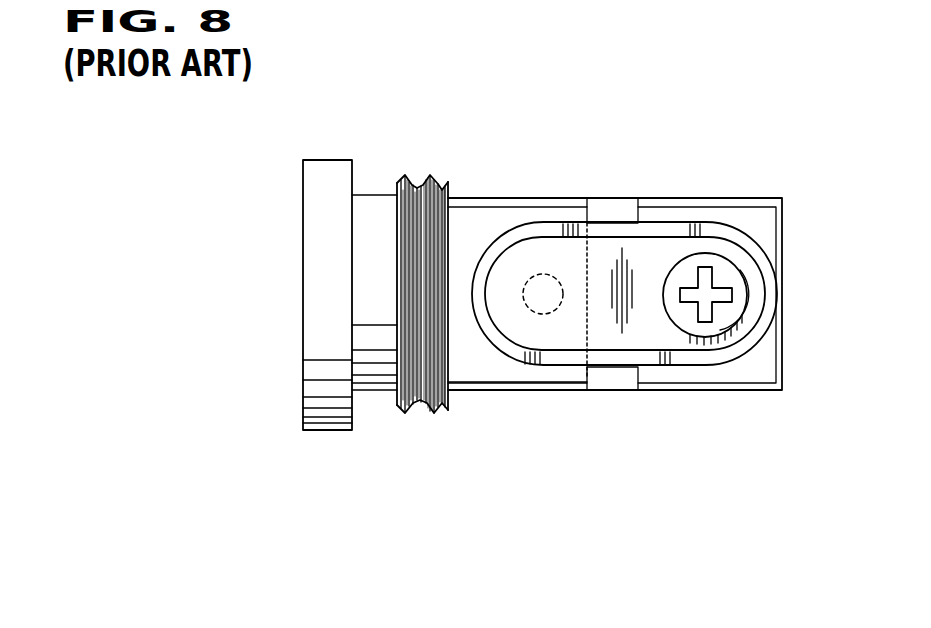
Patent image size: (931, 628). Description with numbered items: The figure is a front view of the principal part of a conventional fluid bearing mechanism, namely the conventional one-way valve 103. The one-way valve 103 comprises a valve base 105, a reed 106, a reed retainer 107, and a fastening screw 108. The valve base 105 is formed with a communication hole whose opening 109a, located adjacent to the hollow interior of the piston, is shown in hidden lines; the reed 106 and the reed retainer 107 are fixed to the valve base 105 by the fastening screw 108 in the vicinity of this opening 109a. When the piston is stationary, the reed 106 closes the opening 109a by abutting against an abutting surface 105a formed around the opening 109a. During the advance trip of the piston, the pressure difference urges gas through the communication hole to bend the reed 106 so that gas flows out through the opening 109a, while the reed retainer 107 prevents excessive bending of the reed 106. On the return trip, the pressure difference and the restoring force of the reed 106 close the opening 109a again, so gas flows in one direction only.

The one-way valve 103 is at (270, 444).
The valve base 105 is at (302, 240).
The abutting surface 105a is at (473, 215).
The reed 106 is at (506, 355).
The reed retainer 107 is at (567, 338).
The fastening screw 108 is at (721, 268).
The opening 109a is at (550, 274).